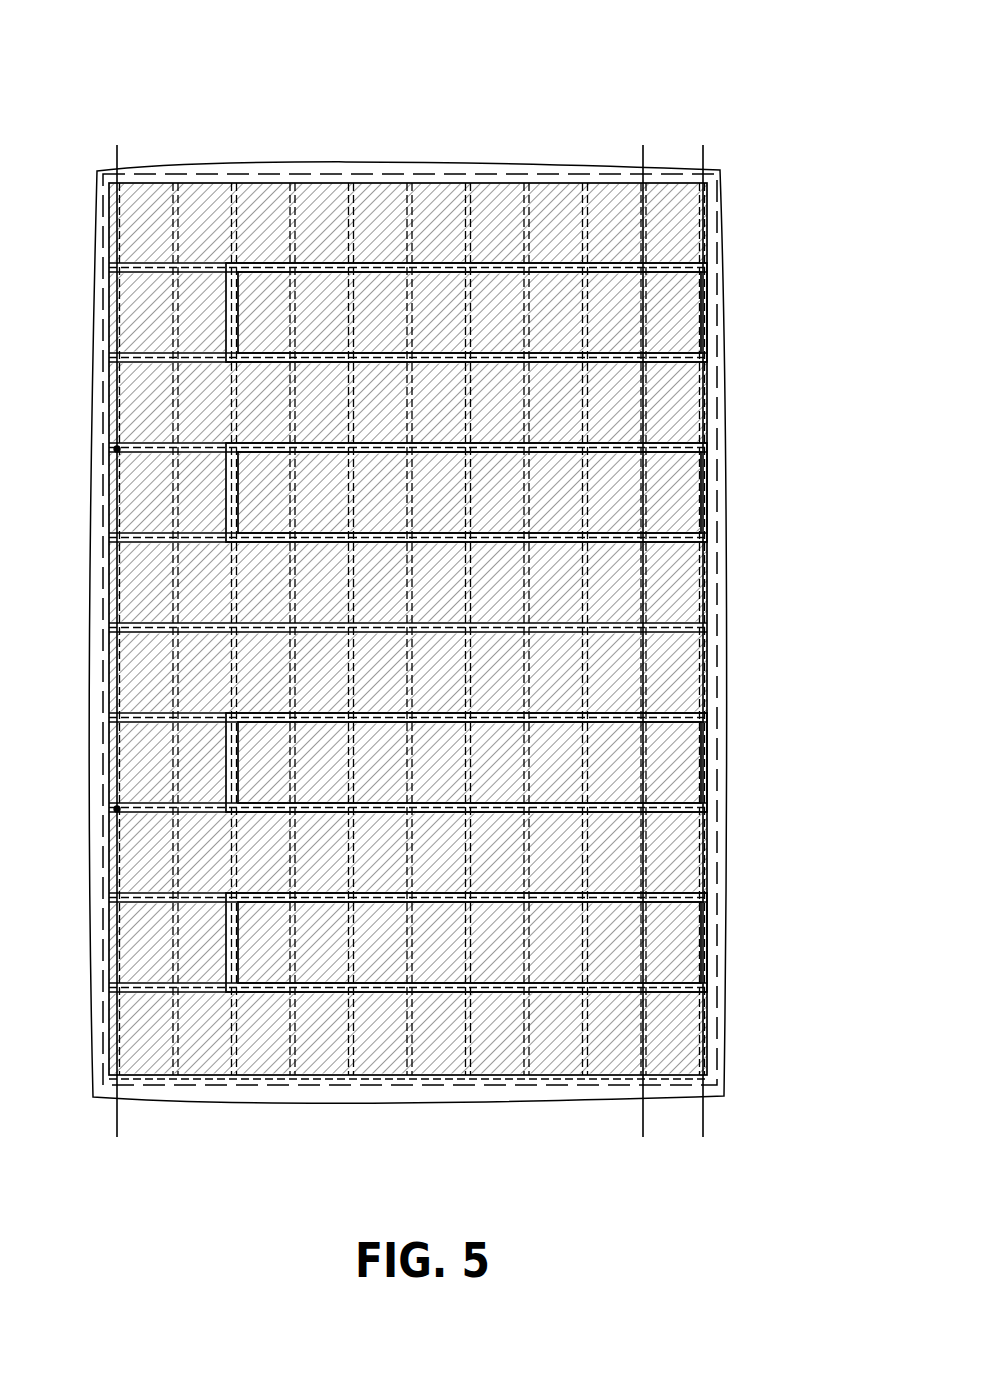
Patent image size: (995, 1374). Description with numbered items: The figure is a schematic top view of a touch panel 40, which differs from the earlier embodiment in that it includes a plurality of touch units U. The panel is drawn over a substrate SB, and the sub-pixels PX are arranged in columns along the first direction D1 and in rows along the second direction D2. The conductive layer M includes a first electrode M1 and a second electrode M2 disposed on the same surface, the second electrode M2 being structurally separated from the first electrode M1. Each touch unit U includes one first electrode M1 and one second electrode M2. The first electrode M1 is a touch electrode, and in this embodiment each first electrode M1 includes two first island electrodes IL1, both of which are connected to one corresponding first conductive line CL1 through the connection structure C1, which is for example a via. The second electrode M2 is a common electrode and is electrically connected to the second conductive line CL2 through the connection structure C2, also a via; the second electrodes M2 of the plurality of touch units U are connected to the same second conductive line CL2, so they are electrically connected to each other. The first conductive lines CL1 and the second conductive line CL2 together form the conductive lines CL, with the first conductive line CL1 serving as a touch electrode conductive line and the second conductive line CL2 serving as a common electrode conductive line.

The touch panel 40 is at (834, 1218).
The substrate SB is at (712, 172).
The touch unit U is at (102, 285).
The sub-pixel PX is at (210, 1079).
The conductive layer M is at (64, 5).
The first electrode M1 is at (790, 325).
The second electrode M2 is at (108, 393).
The first island electrode IL1 is at (710, 331).
The connection structure C1 is at (700, 315).
The connection structure C2 is at (116, 449).
The conductive lines CL is at (200, 5).
The first conductive line CL1 is at (643, 1110).
The second conductive line CL2 is at (118, 1110).
The first direction D1 is at (777, 1037).
The second direction D2 is at (867, 1011).